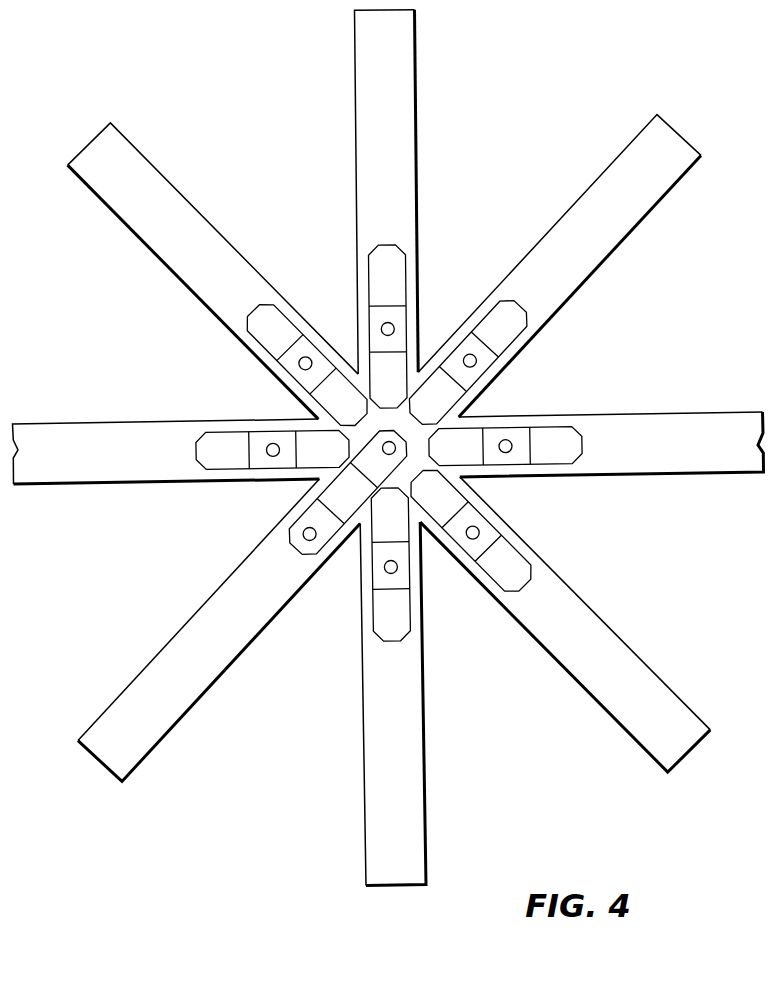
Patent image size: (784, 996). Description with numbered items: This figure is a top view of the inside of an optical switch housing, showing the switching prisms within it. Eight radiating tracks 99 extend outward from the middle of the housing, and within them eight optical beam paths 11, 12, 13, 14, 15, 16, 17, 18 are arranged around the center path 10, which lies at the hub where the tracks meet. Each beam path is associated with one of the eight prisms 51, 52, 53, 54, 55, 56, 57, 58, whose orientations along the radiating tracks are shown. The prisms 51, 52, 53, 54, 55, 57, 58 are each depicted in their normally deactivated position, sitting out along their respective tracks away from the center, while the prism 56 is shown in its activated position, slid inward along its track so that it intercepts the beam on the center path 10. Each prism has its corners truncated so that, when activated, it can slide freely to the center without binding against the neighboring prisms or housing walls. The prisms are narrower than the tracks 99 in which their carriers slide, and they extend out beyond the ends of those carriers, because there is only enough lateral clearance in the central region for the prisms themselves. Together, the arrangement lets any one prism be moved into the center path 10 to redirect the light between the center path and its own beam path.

The supporting arm member 99 is at (372, 131).
The center path 10 is at (396, 446).
The optical beam path 11 is at (394, 327).
The optical beam path 12 is at (476, 364).
The optical beam path 13 is at (507, 452).
The optical beam path 14 is at (472, 539).
The optical beam path 15 is at (385, 573).
The optical beam path 16 is at (304, 530).
The optical beam path 17 is at (270, 444).
The optical beam path 18 is at (308, 357).
The prism 51 is at (406, 253).
The prism 52 is at (527, 336).
The prism 53 is at (570, 462).
The prism 54 is at (517, 589).
The prism 55 is at (377, 631).
The prism 56 is at (294, 541).
The prism 57 is at (211, 436).
The prism 58 is at (262, 302).